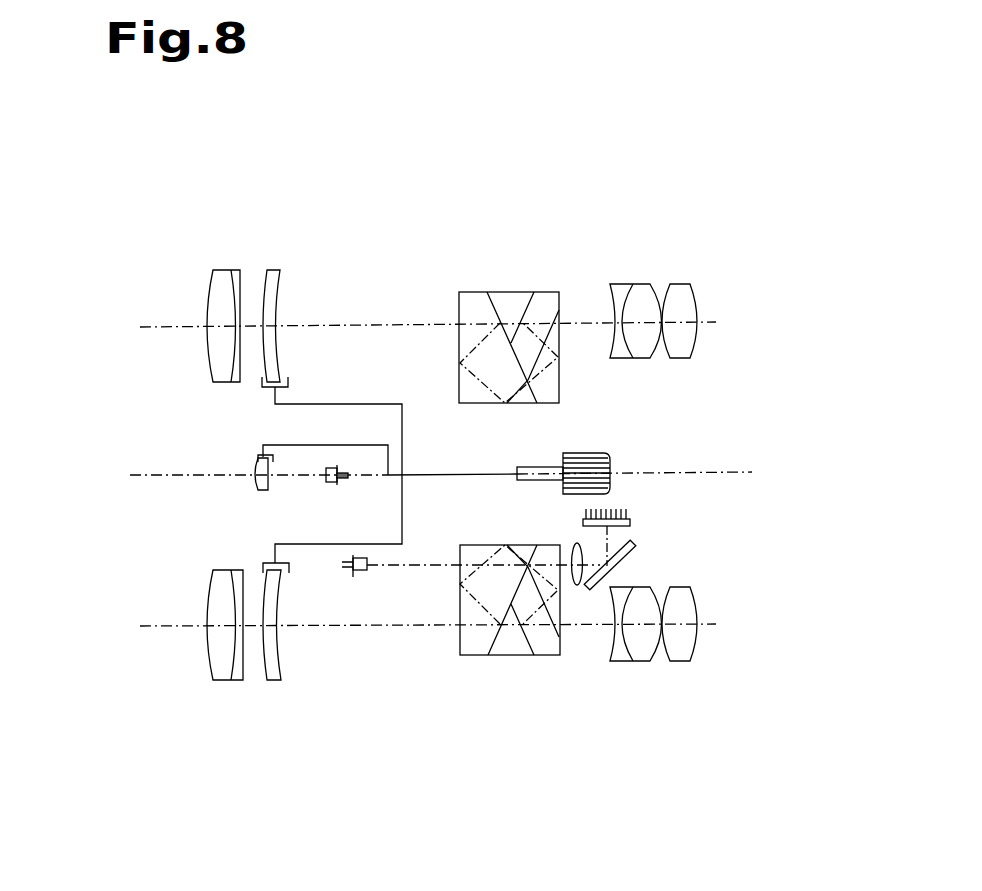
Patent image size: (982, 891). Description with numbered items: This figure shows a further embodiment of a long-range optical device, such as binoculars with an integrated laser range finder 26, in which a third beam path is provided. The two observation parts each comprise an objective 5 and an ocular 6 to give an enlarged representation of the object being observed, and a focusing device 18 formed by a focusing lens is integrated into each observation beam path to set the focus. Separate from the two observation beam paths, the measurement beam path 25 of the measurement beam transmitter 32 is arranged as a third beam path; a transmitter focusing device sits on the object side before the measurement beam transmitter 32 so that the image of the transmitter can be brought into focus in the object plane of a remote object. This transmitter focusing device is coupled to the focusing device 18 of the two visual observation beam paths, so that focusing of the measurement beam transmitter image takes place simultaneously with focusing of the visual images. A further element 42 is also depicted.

The objective 5 is at (213, 265).
The focusing device 18 is at (275, 265).
The ocular 6 is at (687, 272).
The measurement beam path 25 is at (175, 477).
The laser range finder 26 is at (322, 492).
The measurement beam transmitter 32 is at (365, 580).
The display element 42 is at (653, 520).